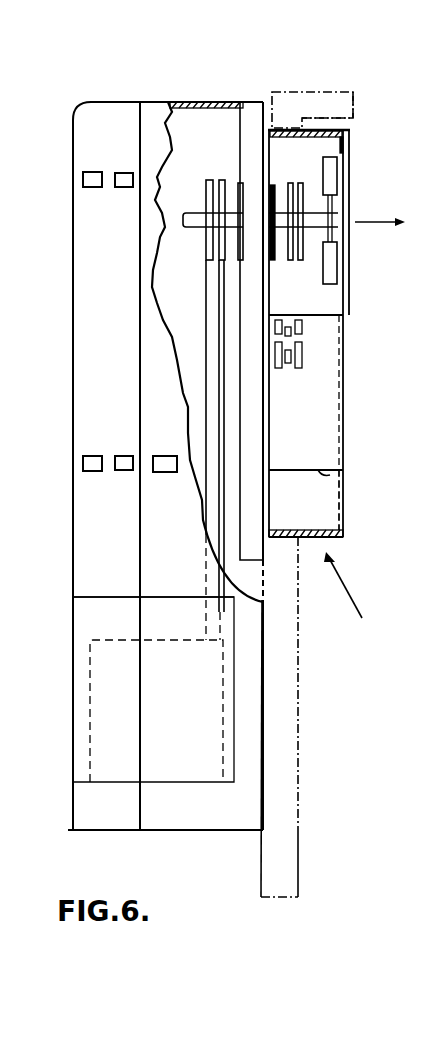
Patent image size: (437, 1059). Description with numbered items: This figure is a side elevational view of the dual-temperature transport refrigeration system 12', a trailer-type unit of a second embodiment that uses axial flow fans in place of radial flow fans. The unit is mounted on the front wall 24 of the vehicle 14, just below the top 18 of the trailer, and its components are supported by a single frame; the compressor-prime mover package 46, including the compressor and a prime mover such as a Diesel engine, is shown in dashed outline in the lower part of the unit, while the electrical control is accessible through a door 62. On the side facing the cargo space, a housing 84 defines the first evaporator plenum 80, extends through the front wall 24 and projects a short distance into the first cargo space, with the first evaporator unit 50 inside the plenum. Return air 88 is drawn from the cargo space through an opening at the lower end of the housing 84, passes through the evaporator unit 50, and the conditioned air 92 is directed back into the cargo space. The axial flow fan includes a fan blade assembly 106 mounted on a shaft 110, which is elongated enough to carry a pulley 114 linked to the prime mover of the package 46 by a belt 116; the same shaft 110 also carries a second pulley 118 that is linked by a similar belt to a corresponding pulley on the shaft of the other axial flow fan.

The transport refrigeration system 12' is at (165, 437).
The vehicle 14 is at (317, 92).
The top 18 is at (342, 102).
The front wall 24 is at (298, 855).
The compressor-prime mover package 46 is at (93, 641).
The first evaporator unit 50 is at (320, 471).
The door 62 is at (124, 597).
The first evaporator plenum 80 is at (322, 513).
The housing 84 is at (342, 495).
The return air 88 is at (360, 616).
The conditioned air 92 is at (376, 222).
The fan blade assembly 106 is at (326, 280).
The shaft 110 is at (192, 215).
The pulley 114 is at (207, 243).
The belt 116 is at (213, 391).
The second pulley 118 is at (297, 180).